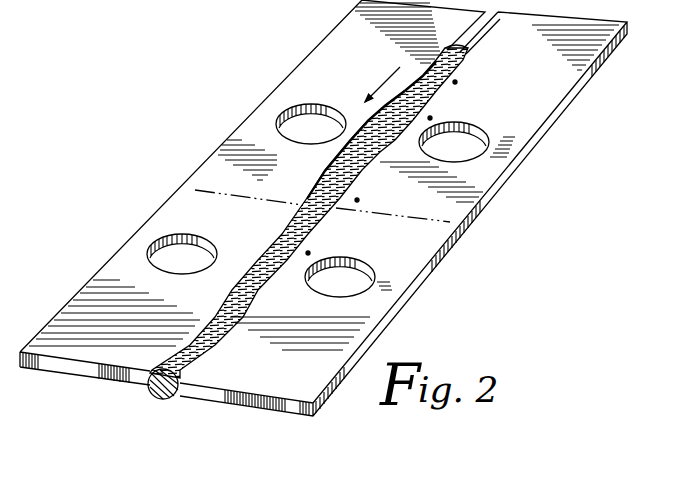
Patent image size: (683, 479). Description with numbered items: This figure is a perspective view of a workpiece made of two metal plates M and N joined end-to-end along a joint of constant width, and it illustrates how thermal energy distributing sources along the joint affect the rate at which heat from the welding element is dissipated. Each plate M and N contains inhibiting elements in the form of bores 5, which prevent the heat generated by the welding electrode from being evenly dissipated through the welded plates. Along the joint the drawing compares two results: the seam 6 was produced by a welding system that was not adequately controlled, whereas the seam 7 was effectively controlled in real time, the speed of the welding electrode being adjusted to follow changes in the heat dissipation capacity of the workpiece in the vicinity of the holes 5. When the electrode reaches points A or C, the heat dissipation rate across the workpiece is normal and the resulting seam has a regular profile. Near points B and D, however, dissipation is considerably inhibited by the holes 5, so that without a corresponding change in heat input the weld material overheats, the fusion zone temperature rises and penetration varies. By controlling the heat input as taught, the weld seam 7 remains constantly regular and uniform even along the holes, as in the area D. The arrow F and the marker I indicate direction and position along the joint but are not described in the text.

The bores 5 is at (308, 105).
The weld seam 6 is at (338, 152).
The weld seam 7 is at (258, 263).
The point A is at (455, 82).
The point B is at (430, 118).
The point C is at (357, 200).
The point D is at (308, 253).
The force direction arrow F is at (382, 85).
The weld bead end I is at (162, 397).
The metal plate M is at (82, 348).
The metal plate N is at (252, 362).